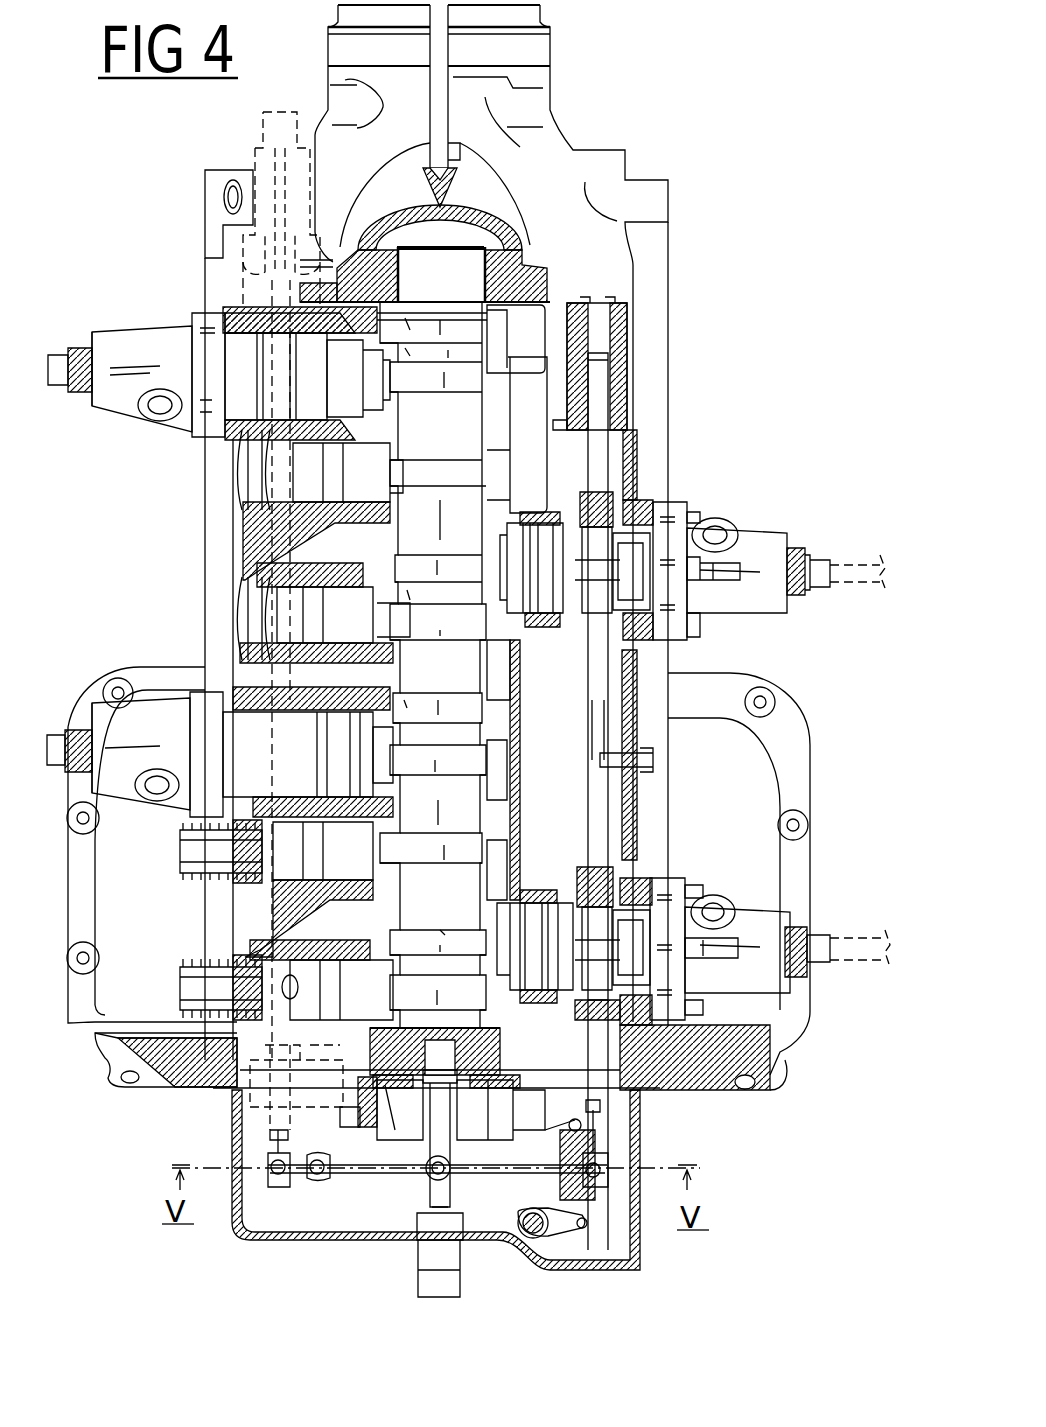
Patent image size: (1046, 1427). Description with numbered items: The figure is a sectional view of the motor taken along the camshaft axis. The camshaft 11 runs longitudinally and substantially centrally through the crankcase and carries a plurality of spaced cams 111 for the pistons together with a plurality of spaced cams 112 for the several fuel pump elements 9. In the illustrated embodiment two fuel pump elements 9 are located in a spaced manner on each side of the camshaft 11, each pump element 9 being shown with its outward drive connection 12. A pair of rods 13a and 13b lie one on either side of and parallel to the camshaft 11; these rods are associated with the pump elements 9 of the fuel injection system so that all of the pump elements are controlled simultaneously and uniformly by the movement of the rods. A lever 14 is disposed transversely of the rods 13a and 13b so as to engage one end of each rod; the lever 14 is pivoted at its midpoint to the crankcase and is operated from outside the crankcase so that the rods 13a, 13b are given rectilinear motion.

The fuel pump element 9 is at (745, 518).
The camshaft 11 is at (450, 900).
The drive shaft 12 is at (847, 560).
The rod 13a is at (600, 685).
The rod 13b is at (250, 755).
The lever 14 is at (360, 1172).
The cam 111 is at (465, 330).
The cam 112 is at (410, 375).